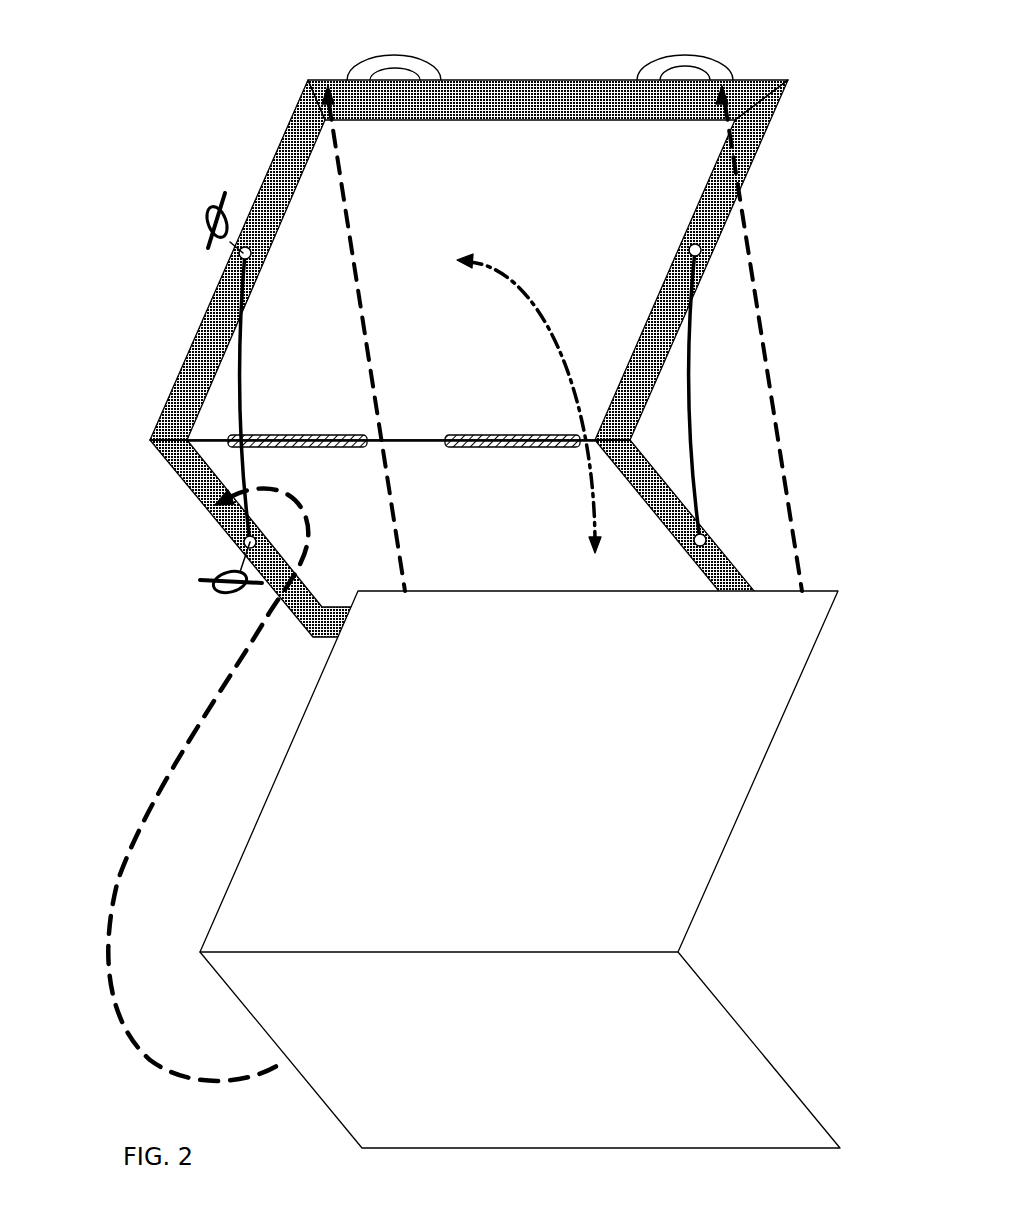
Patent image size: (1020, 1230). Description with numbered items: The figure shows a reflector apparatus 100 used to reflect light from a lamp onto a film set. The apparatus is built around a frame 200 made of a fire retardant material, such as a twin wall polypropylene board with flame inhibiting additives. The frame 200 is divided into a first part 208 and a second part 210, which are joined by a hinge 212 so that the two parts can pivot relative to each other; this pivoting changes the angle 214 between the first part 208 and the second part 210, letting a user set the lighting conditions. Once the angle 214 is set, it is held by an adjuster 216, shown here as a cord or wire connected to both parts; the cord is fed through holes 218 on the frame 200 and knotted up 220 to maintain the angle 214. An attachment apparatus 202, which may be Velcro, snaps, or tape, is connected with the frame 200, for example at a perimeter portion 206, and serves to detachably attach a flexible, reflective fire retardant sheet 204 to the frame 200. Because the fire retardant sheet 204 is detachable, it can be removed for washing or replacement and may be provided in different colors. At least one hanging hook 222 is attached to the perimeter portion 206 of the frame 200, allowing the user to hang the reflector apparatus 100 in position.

The reflector apparatus 100 is at (84, 60).
The frame 200 is at (277, 150).
The attachment apparatus 202 is at (753, 118).
The fire retardant sheet 204 is at (578, 734).
The perimeter portion 206 is at (197, 477).
The first part 208 is at (193, 368).
The second part 210 is at (247, 538).
The hinge 212 is at (302, 434).
The angle 214 is at (548, 313).
The adjuster 216 is at (688, 425).
The holes 218 is at (243, 255).
The knot 220 is at (207, 212).
The hanging hook 222 is at (307, 82).